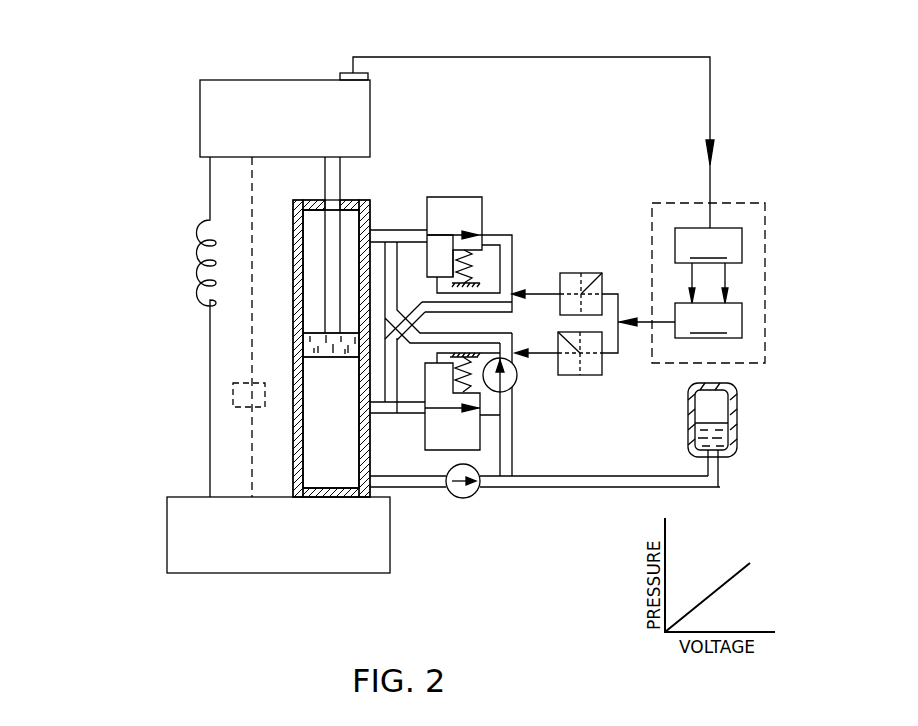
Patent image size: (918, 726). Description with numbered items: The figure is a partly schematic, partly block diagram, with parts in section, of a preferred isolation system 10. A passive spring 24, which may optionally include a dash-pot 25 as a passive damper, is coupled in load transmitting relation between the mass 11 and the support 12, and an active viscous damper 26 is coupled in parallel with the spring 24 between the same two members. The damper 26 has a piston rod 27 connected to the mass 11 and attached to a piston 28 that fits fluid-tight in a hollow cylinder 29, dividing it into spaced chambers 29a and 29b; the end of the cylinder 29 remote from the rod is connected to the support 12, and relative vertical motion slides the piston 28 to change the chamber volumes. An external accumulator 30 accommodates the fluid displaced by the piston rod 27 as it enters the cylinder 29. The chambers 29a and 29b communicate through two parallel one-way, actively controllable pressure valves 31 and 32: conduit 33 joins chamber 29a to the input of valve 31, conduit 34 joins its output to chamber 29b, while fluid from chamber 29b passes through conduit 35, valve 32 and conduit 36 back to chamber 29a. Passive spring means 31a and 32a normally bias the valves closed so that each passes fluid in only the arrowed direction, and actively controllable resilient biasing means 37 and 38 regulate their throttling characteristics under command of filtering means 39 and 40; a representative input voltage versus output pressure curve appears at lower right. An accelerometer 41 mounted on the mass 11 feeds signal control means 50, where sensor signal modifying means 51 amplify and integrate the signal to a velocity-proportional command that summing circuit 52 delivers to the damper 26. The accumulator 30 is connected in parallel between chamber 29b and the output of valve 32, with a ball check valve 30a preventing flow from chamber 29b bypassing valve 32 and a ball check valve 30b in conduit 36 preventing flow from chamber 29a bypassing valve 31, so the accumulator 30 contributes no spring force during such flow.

The isolation system 10 is at (116, 186).
The mass 11 is at (200, 105).
The support 12 is at (167, 516).
The spring 24 is at (200, 250).
The dash-pot 25 is at (250, 427).
The active viscous damper 26 is at (359, 190).
The piston rod 27 is at (325, 176).
The piston 28 is at (310, 358).
The cylinder 29 is at (299, 217).
The cylinder chamber 29a is at (318, 262).
The cylinder chamber 29b is at (318, 425).
The accumulator 30 is at (739, 404).
The ball check valve 30a is at (479, 491).
The ball check valve 30b is at (519, 383).
The pressure valve 31 is at (462, 196).
The passive spring means 31a is at (475, 268).
The pressure valve 32 is at (481, 442).
The passive spring means 32a is at (490, 355).
The conduit 33 is at (378, 232).
The conduit 34 is at (513, 247).
The conduit 35 is at (388, 415).
The conduit 36 is at (513, 423).
The actively controllable resilient biasing means 37 is at (440, 262).
The actively controllable resilient biasing means 38 is at (482, 408).
The command signal filtering means 39 is at (588, 277).
The command signal filtering means 40 is at (591, 377).
The accelerometer 41 is at (350, 72).
The signal control means 50 is at (742, 203).
The sensor signal modifying means 51 is at (708, 265).
The summing circuit 52 is at (708, 320).